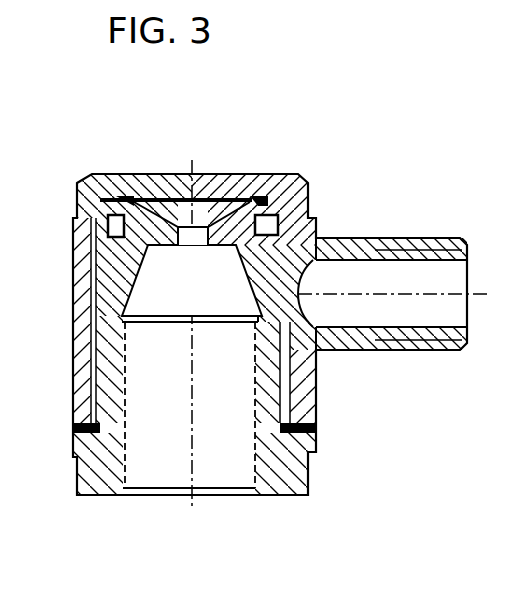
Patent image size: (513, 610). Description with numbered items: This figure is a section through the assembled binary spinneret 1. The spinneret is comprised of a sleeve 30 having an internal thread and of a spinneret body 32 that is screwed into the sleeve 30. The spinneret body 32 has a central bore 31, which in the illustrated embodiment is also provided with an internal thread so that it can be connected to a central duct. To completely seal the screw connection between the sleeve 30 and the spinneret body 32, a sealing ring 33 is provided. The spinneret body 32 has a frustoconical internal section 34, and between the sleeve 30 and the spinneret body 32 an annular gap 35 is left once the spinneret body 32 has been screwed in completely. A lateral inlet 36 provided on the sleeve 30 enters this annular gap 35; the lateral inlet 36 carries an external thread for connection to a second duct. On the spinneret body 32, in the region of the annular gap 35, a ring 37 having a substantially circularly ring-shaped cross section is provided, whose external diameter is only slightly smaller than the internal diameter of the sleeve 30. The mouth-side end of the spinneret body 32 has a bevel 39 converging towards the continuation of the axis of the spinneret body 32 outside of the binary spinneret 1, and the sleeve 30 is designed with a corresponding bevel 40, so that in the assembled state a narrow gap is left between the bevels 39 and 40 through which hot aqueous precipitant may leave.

The binary spinneret 1 is at (338, 401).
The sleeve 30 is at (73, 369).
The central bore 31 is at (213, 468).
The spinneret body 32 is at (318, 482).
The sealing ring 33 is at (73, 428).
The frustoconical internal section 34 is at (96, 292).
The annular gap 35 is at (105, 267).
The lateral inlet 36 is at (400, 236).
The ring 37 is at (306, 222).
The bevel 39 is at (100, 201).
The bevel 40 is at (250, 197).